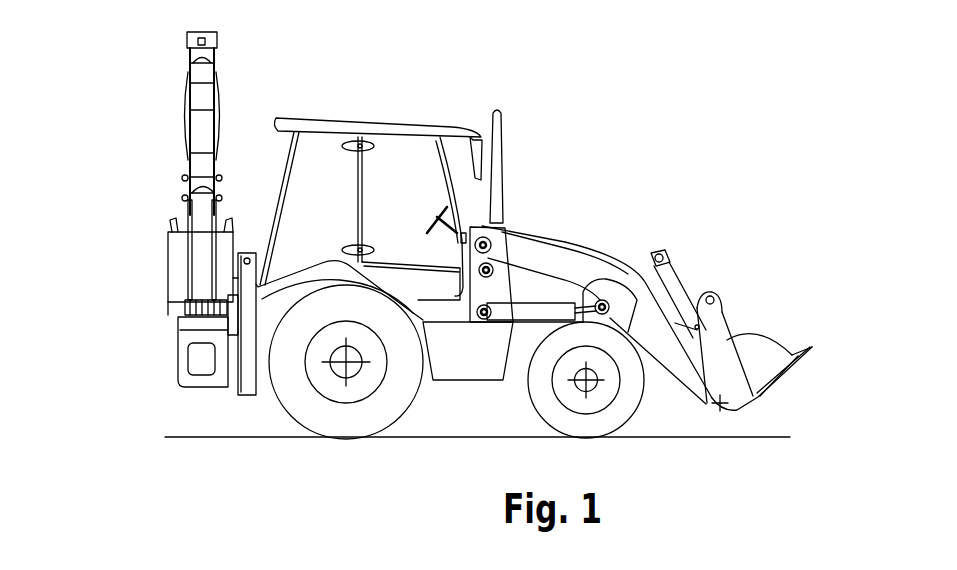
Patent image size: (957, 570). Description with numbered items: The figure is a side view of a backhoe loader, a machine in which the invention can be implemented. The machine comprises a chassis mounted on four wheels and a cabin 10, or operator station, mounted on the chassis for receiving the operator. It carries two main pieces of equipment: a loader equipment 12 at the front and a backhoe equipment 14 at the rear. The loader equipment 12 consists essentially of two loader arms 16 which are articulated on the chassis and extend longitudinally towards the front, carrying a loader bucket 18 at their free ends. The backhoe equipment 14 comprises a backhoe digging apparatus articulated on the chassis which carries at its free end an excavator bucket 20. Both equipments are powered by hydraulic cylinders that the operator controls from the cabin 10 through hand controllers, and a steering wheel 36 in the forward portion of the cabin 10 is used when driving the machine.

The cabin 10 is at (438, 85).
The loader equipment 12 is at (645, 220).
The backhoe equipment 14 is at (140, 158).
The loader arms 16 is at (548, 263).
The loader bucket 18 is at (757, 363).
The excavator bucket 20 is at (175, 273).
The steering wheel 36 is at (427, 230).